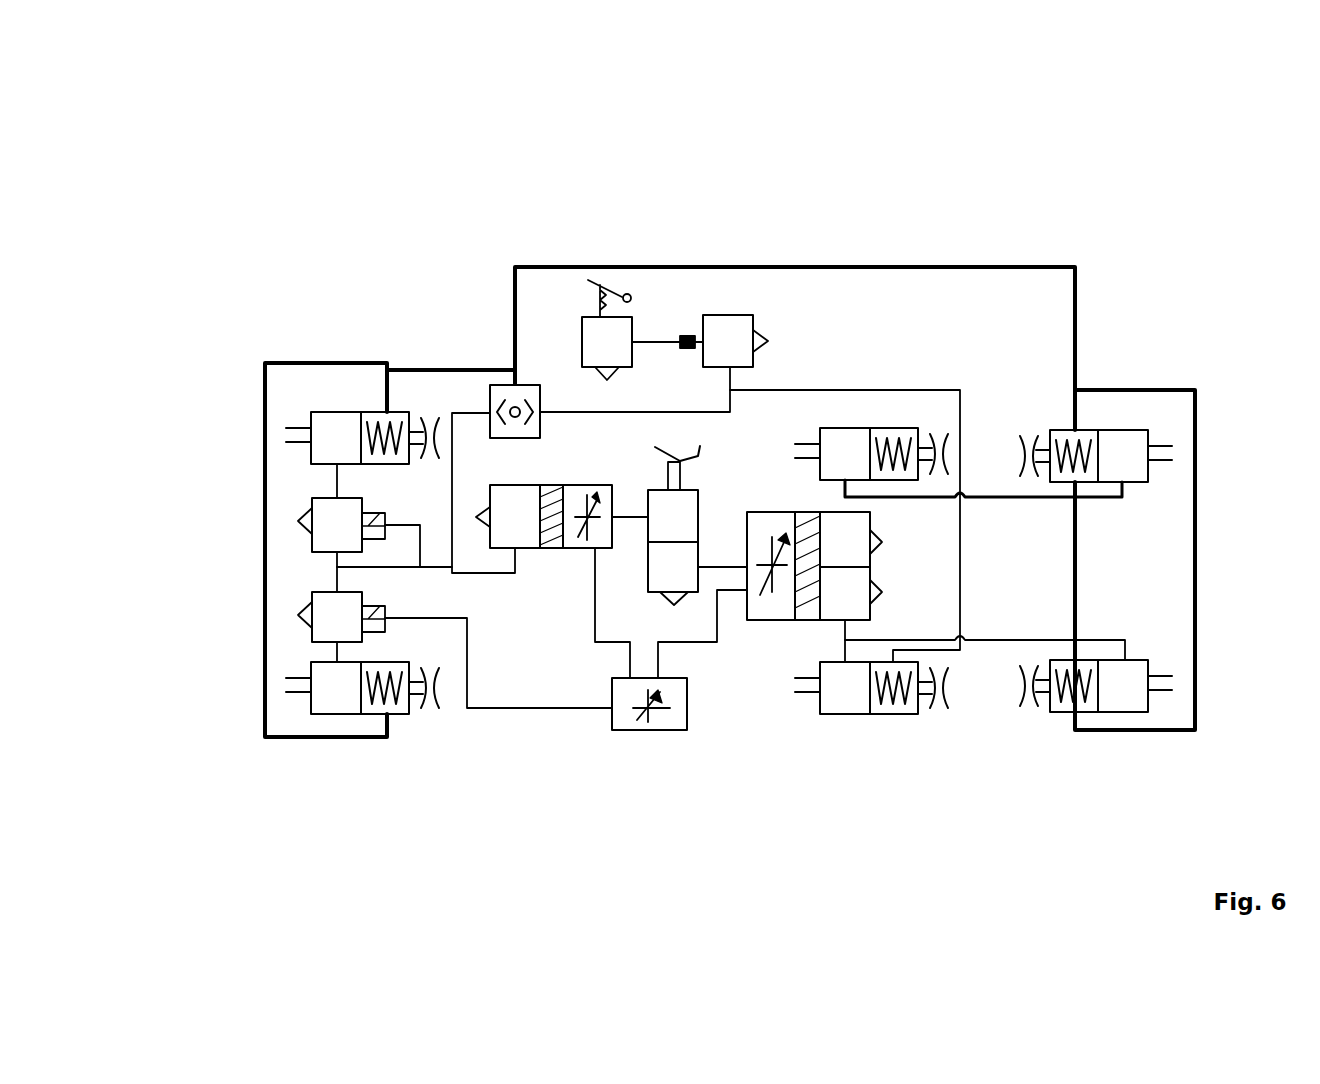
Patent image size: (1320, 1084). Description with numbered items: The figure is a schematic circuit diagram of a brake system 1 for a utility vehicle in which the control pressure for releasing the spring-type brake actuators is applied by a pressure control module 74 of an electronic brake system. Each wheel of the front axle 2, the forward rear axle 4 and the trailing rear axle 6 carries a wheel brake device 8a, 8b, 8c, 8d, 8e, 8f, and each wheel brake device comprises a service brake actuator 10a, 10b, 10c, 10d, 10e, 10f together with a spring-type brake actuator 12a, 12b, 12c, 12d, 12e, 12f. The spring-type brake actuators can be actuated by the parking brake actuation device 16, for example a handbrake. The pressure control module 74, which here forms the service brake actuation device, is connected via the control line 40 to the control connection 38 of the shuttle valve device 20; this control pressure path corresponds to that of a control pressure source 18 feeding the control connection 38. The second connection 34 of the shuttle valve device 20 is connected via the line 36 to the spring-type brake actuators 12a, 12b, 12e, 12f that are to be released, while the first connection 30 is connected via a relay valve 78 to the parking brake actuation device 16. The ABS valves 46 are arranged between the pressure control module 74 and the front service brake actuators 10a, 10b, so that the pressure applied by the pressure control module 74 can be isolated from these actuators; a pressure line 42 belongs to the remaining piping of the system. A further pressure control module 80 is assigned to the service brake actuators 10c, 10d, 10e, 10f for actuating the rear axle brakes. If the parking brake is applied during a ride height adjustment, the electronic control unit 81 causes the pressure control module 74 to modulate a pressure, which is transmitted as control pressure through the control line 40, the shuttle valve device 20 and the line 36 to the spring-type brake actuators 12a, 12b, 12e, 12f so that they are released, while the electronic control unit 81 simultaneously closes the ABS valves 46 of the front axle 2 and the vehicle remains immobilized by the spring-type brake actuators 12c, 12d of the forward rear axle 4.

The brake system 1 is at (197, 187).
The front axle 2 is at (322, 778).
The rear axle 4 is at (854, 775).
The rear axle 6 is at (1080, 770).
The wheel brake device 8a is at (308, 367).
The wheel brake device 8b is at (308, 740).
The wheel brake device 8c is at (868, 351).
The wheel brake device 8d is at (877, 750).
The wheel brake device 8e is at (1145, 352).
The wheel brake device 8f is at (1147, 737).
The service brake actuator 10a is at (323, 413).
The service brake actuator 10b is at (322, 712).
The service brake actuator 10c is at (840, 428).
The service brake actuator 10d is at (843, 712).
The service brake actuator 10e is at (1128, 430).
The service brake actuator 10f is at (1125, 712).
The spring-type brake actuator 12a is at (390, 413).
The spring-type brake actuator 12b is at (397, 712).
The spring-type brake actuator 12c is at (905, 428).
The spring-type brake actuator 12d is at (903, 712).
The spring-type brake actuator 12e is at (1060, 430).
The spring-type brake actuator 12f is at (1052, 712).
The parking brake actuation device 16 is at (586, 317).
The control pressure source 18 is at (520, 533).
The shuttle valve device 20 is at (522, 383).
The first connection 30 is at (547, 405).
The second connection 34 is at (513, 372).
The line 36 is at (453, 370).
The control connection 38 is at (490, 408).
The control line 40 is at (452, 460).
The pressure line 42 is at (490, 575).
The ABS valve 46 is at (298, 520).
The pressure control module 74 is at (577, 550).
The relay valve 78 is at (725, 315).
The pressure control module 80 is at (762, 620).
The electronic control module (ECU) 81 is at (668, 720).